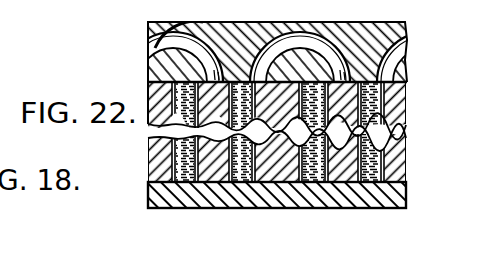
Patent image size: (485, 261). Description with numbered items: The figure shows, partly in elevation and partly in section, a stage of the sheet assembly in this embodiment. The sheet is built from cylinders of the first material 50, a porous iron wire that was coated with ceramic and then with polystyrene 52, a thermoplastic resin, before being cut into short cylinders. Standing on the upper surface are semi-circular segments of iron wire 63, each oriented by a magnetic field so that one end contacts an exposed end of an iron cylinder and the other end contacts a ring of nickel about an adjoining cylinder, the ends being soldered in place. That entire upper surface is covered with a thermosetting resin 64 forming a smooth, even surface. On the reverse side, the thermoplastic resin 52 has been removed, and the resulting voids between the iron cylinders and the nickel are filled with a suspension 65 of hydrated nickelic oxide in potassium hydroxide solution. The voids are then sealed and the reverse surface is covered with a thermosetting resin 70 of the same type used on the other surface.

The first material 50 is at (277, 62).
The polystyrene 52 is at (277, 64).
The iron wire 63 is at (203, 50).
The thermosetting resin 64 is at (365, 36).
The suspension 65 is at (183, 167).
The thermosetting resin 70 is at (373, 198).